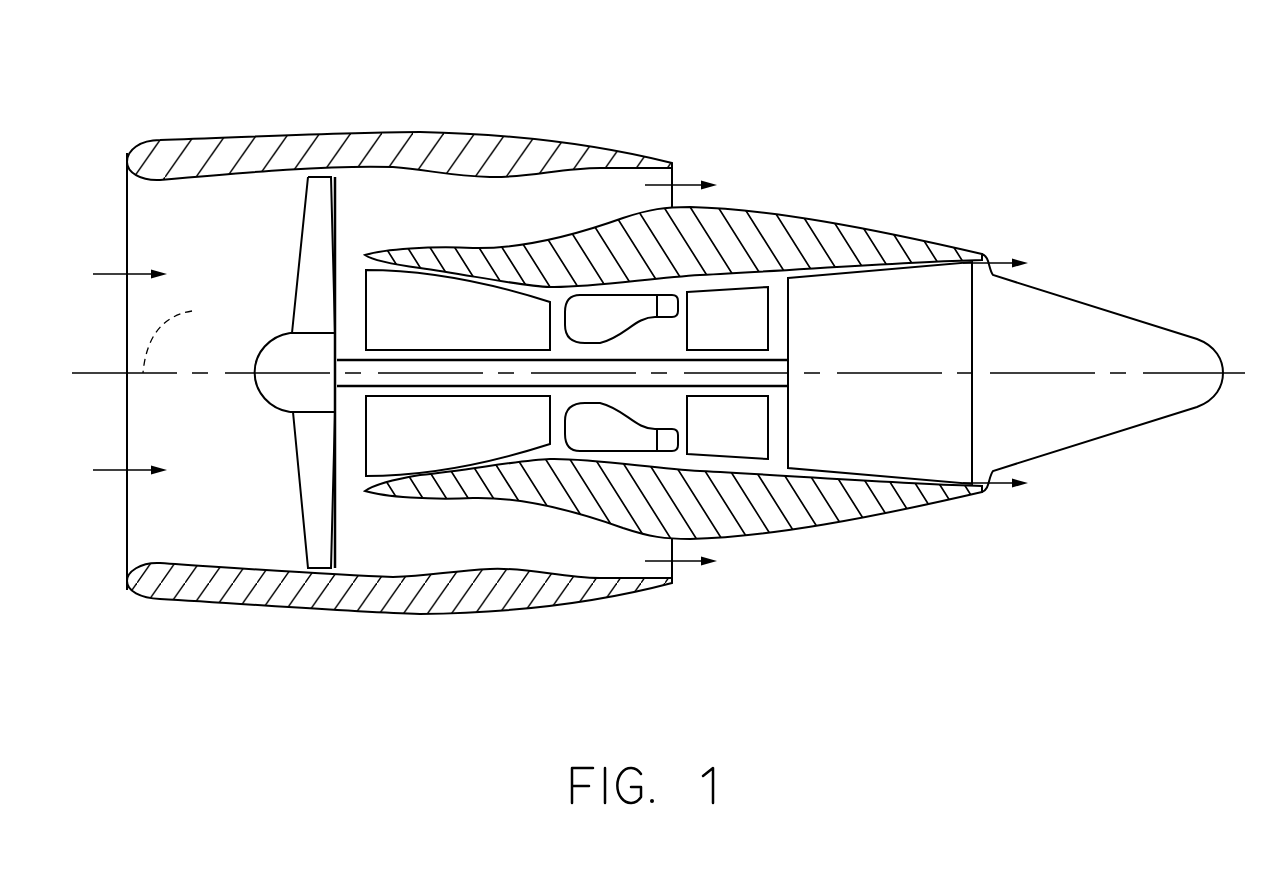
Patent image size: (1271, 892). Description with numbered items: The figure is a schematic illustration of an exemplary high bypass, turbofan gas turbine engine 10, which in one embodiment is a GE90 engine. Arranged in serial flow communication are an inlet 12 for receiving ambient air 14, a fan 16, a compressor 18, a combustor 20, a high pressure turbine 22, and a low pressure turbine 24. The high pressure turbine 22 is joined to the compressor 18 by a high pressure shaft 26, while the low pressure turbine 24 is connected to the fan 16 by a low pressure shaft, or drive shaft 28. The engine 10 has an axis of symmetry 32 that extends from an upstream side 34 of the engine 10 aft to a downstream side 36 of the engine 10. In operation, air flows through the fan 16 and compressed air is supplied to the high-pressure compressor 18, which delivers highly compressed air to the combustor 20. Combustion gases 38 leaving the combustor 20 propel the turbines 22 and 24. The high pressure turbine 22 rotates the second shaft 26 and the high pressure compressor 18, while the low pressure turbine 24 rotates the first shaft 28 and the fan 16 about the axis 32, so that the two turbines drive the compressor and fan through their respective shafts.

The gas turbine engine 10 is at (742, 73).
The inlet 12 is at (132, 172).
The ambient air 14 is at (125, 272).
The fan 16 is at (352, 197).
The compressor 18 is at (436, 330).
The combustor 20 is at (583, 425).
The high pressure turbine 22 is at (745, 335).
The low pressure turbine 24 is at (900, 322).
The high pressure shaft 26 is at (560, 350).
The low pressure shaft 28 is at (778, 388).
The axis of symmetry 32 is at (185, 334).
The upstream side 34 is at (193, 640).
The downstream side 36 is at (1034, 513).
The combustion gases 38 is at (675, 440).